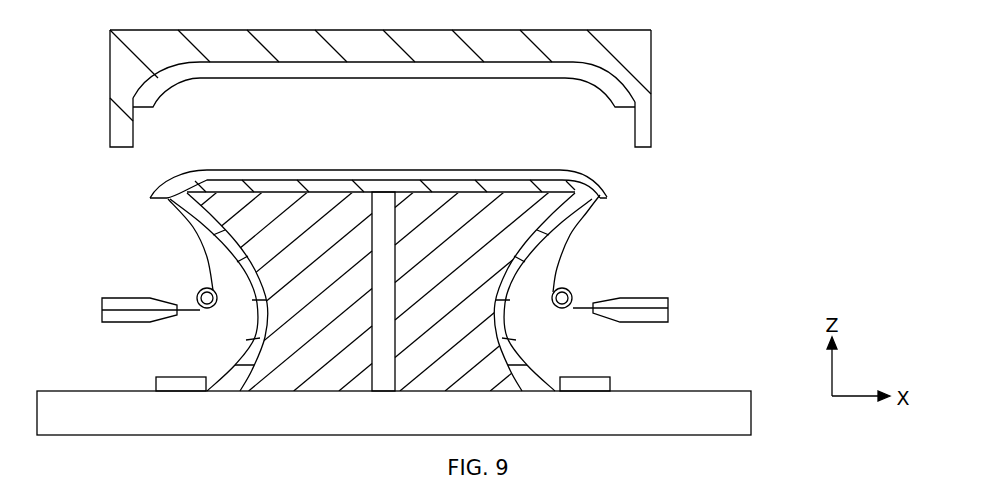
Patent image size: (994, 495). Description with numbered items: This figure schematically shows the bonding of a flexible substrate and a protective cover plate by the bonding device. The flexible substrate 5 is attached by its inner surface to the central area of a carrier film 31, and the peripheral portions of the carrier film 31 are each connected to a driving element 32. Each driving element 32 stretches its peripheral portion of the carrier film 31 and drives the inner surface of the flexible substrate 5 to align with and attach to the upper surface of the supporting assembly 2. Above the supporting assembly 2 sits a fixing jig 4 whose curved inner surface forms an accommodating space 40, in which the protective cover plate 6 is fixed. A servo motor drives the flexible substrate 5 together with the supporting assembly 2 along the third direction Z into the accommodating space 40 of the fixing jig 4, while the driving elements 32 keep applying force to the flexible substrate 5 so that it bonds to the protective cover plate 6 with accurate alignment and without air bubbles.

The supporting assembly 2 is at (510, 345).
The fixing jig 4 is at (615, 45).
The flexible substrate 5 is at (613, 198).
The protective cover plate 6 is at (615, 98).
The carrier film 31 is at (573, 250).
The driving element 32 is at (672, 312).
The accommodating space 40 is at (610, 130).